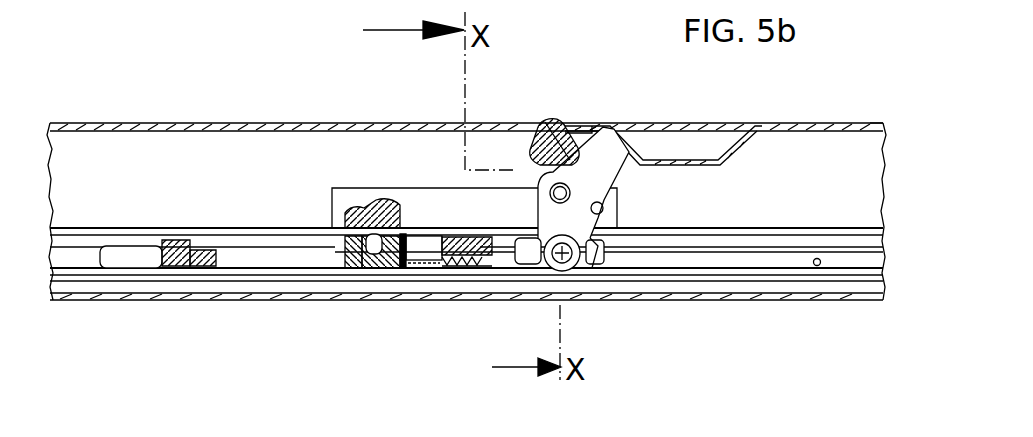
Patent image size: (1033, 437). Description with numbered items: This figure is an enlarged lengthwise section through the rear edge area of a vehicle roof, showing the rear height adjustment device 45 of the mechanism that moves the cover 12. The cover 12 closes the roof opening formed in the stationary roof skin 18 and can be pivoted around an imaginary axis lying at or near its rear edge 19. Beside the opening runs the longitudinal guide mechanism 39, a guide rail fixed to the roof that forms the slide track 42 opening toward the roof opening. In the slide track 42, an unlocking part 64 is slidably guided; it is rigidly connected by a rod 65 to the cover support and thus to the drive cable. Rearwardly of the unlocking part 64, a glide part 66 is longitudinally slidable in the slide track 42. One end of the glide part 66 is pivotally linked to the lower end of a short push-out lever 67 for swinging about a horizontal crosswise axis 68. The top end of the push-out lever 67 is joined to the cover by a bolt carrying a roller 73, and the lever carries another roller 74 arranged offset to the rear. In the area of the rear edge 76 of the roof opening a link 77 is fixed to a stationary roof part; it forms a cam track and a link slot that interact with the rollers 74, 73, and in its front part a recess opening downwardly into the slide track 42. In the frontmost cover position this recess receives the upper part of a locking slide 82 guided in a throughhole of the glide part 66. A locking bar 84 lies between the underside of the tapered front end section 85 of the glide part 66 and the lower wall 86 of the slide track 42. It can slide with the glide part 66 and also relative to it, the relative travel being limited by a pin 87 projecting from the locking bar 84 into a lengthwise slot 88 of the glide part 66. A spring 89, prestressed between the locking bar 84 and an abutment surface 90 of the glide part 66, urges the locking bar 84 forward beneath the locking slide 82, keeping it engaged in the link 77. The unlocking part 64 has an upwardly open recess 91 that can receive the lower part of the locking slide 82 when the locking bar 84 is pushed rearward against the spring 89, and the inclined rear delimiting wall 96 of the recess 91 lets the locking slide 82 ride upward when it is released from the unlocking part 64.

The cover 12 is at (147, 122).
The stationary roof skin 18 is at (862, 122).
The rear edge 19 is at (531, 128).
The longitudinal guide mechanism 39 is at (817, 228).
The slide track 42 is at (753, 238).
The rear height adjustment device 45 is at (660, 310).
The unlocking part 64 is at (148, 254).
The rod 65 is at (82, 252).
The glide part 66 is at (500, 294).
The push-out lever 67 is at (598, 268).
The horizontal crosswise axis 68 is at (562, 255).
The roller 73 is at (602, 172).
The roller 74 is at (571, 186).
The rear edge 76 is at (575, 126).
The link 77 is at (359, 193).
The locking slide 82 is at (374, 216).
The locking bar 84 is at (378, 264).
The front end section 85 is at (352, 264).
The lower wall 86 is at (817, 266).
The pin 87 is at (403, 266).
The lengthwise slot 88 is at (420, 238).
The spring 89 is at (450, 256).
The abutment surface 90 is at (470, 268).
The recess 91 is at (177, 243).
The rear delimiting wall 96 is at (190, 247).